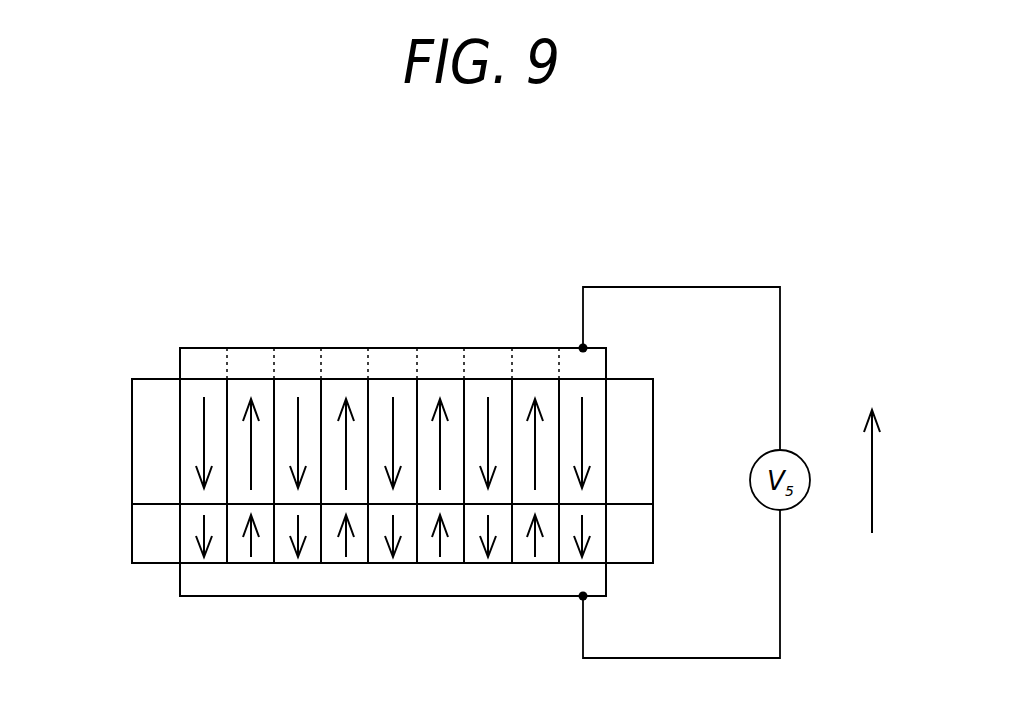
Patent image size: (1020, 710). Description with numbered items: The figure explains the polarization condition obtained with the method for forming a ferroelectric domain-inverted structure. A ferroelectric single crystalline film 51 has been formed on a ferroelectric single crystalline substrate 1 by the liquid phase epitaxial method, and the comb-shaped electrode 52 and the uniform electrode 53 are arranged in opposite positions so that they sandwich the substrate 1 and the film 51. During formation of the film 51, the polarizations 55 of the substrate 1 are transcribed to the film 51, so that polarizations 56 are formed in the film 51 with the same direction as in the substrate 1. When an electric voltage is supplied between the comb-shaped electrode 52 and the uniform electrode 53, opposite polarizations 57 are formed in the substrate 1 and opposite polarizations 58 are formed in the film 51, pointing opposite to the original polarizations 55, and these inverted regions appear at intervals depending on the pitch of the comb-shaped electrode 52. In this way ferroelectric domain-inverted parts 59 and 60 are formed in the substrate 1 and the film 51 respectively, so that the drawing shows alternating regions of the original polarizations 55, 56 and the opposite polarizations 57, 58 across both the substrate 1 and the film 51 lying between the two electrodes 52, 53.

The ferroelectric single crystalline substrate 1 is at (637, 433).
The ferroelectric single crystalline film 51 is at (637, 540).
The comb-shaped electrode 52 is at (606, 360).
The uniform electrode 53 is at (604, 589).
The polarizations of the substrate 55 is at (252, 443).
The polarizations of the film 56 is at (253, 547).
The opposite polarizations in the substrate 57 is at (203, 415).
The opposite polarizations in the film 58 is at (207, 523).
The ferroelectric domain-inverted part of the substrate 59 is at (180, 417).
The ferroelectric domain-inverted part of the film 60 is at (180, 530).